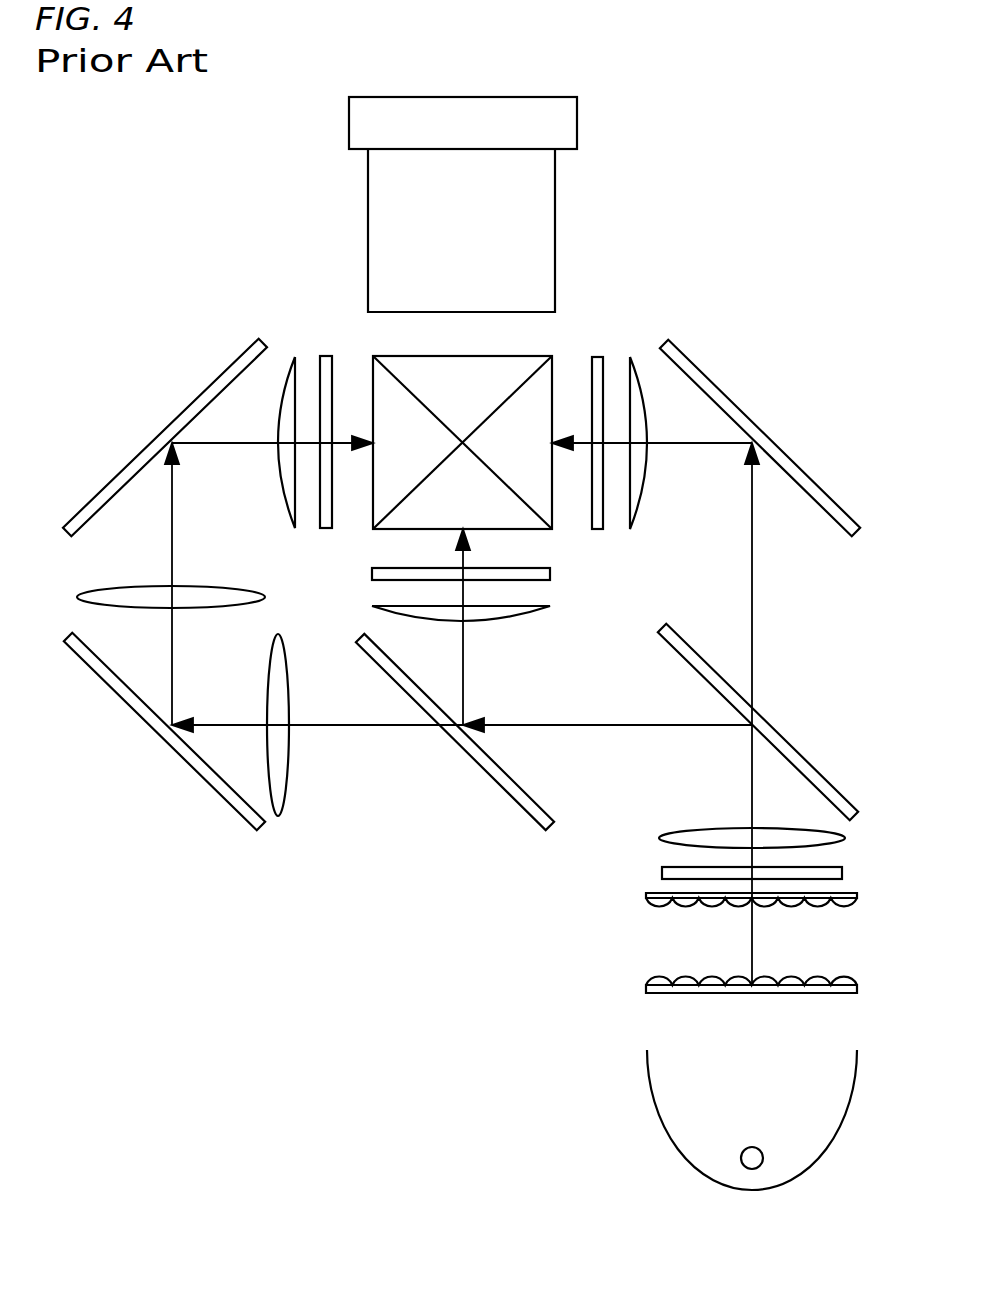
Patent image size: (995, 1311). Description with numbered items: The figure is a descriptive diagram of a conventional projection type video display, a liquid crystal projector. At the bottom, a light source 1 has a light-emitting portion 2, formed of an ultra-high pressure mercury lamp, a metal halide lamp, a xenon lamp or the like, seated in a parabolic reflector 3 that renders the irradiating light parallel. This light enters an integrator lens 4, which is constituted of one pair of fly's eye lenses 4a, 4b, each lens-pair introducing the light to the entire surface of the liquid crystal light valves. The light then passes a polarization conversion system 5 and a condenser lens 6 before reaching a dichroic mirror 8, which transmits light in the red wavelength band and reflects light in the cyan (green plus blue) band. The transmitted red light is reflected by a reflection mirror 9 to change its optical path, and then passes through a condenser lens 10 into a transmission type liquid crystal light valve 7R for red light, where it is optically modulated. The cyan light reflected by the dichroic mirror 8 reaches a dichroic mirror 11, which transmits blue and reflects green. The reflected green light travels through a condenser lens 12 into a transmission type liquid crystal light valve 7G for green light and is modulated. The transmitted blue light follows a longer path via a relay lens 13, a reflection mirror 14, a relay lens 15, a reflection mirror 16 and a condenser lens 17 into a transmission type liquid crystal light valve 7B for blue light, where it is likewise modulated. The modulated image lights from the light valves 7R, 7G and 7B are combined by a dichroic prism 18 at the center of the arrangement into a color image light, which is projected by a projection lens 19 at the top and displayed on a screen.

The light source 1 is at (715, 1120).
The light-emitting portion 2 is at (740, 1158).
The parabolic reflector 3 is at (657, 1108).
The integrator lens 4 is at (706, 942).
The fly's eye lens 4a is at (721, 989).
The fly's eye lens 4b is at (648, 898).
The polarization conversion system 5 is at (665, 872).
The condenser lens 6 is at (703, 836).
The transmission type liquid crystal light valve for blue light 7B is at (331, 356).
The transmission type liquid crystal light valve for green light 7G is at (550, 573).
The transmission type liquid crystal light valve for red light 7R is at (598, 357).
The dichroic mirror 8 is at (805, 765).
The reflection mirror 9 is at (805, 484).
The condenser lens 10 is at (632, 357).
The dichroic mirror 11 is at (503, 775).
The condenser lens 12 is at (505, 614).
The relay lens 13 is at (282, 782).
The reflection mirror 14 is at (192, 766).
The relay lens 15 is at (138, 590).
The reflection mirror 16 is at (198, 405).
The condenser lens 17 is at (287, 492).
The dichroic prism 18 is at (395, 525).
The projection lens 19 is at (378, 215).